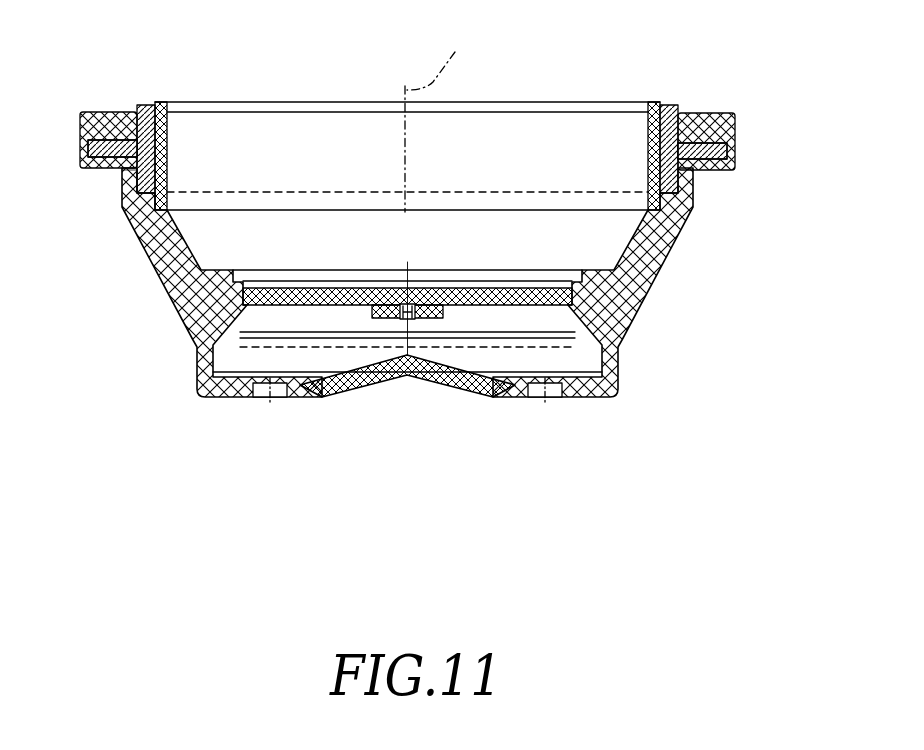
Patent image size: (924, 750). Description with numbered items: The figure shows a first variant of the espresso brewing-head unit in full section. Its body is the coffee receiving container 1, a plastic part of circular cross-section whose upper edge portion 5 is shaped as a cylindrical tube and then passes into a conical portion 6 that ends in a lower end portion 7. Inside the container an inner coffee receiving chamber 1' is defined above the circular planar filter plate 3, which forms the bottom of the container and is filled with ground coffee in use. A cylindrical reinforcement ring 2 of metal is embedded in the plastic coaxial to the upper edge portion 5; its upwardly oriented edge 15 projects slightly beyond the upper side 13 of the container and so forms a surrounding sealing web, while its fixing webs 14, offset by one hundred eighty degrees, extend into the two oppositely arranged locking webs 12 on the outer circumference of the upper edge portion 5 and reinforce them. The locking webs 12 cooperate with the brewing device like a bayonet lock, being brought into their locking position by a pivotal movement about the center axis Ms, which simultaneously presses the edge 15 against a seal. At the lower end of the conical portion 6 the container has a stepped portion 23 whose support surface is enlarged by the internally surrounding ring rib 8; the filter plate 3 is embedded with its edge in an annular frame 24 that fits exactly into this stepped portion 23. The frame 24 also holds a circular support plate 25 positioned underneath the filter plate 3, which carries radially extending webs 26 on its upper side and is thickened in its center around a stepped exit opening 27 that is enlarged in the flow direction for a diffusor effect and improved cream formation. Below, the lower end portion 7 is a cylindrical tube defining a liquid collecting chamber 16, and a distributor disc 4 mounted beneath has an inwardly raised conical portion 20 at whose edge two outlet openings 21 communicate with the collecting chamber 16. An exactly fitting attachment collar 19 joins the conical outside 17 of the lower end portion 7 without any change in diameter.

The coffee receiving container 1 is at (500, 277).
The coffee receiving chamber 1' is at (407, 112).
The reinforcement ring 2 is at (142, 102).
The filter plate 3 is at (293, 283).
The distributor disc 4 is at (500, 398).
The upper edge portion 5 is at (121, 188).
The conical portion 6 is at (168, 257).
The lower end portion 7 is at (273, 342).
The ring rib 8 is at (333, 372).
The locking webs 12 is at (80, 150).
The upper side 13 is at (704, 111).
The fixing webs 14 is at (108, 112).
The upwardly oriented edge 15 is at (666, 105).
The liquid collecting chamber 16 is at (200, 388).
The conical outside 17 is at (673, 248).
The attachment collar 19 is at (623, 368).
The conical portion 20 is at (458, 368).
The outlet openings 21 is at (283, 398).
The stepped portion 23 is at (640, 328).
The annular frame 24 is at (648, 303).
The support plate 25 is at (337, 393).
The radially extending webs 26 is at (394, 318).
The exit opening 27 is at (392, 342).
The center axis Ms is at (448, 114).